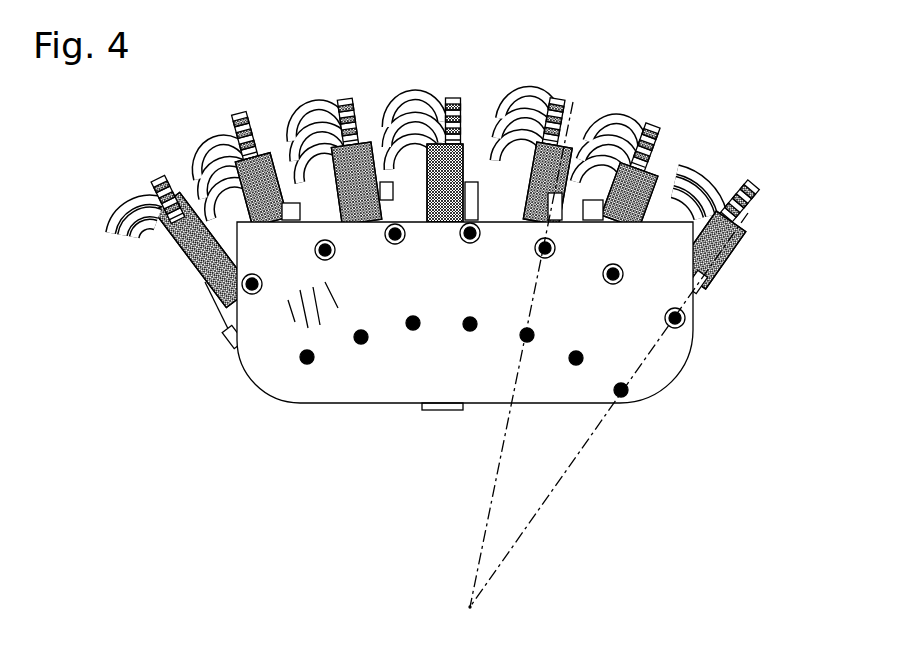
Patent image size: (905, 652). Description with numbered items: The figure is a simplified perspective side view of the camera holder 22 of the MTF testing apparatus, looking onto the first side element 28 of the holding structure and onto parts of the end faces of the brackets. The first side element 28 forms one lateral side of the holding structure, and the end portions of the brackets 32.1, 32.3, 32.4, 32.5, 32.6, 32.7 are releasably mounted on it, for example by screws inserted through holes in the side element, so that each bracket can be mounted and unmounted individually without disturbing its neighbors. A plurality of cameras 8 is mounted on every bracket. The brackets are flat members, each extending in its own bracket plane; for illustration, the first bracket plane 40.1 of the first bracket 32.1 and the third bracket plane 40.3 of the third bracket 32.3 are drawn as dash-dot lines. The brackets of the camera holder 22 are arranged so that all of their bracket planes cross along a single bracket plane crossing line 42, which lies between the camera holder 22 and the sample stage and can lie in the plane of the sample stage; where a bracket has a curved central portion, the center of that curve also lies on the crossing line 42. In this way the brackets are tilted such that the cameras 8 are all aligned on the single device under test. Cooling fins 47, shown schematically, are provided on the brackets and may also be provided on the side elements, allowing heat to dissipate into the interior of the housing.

The camera holder 22 is at (695, 90).
The first side element 28 is at (337, 383).
The cameras 8 is at (218, 298).
The first bracket 32.1 is at (700, 291).
The third bracket 32.3 is at (561, 204).
The bracket 32.4 is at (470, 180).
The bracket 32.5 is at (383, 187).
The bracket 32.6 is at (313, 208).
The bracket 32.7 is at (232, 222).
The first bracket plane 40.1 is at (567, 470).
The third bracket plane 40.3 is at (502, 442).
The bracket plane crossing line 42 is at (467, 610).
The cooling fins 47 is at (287, 322).